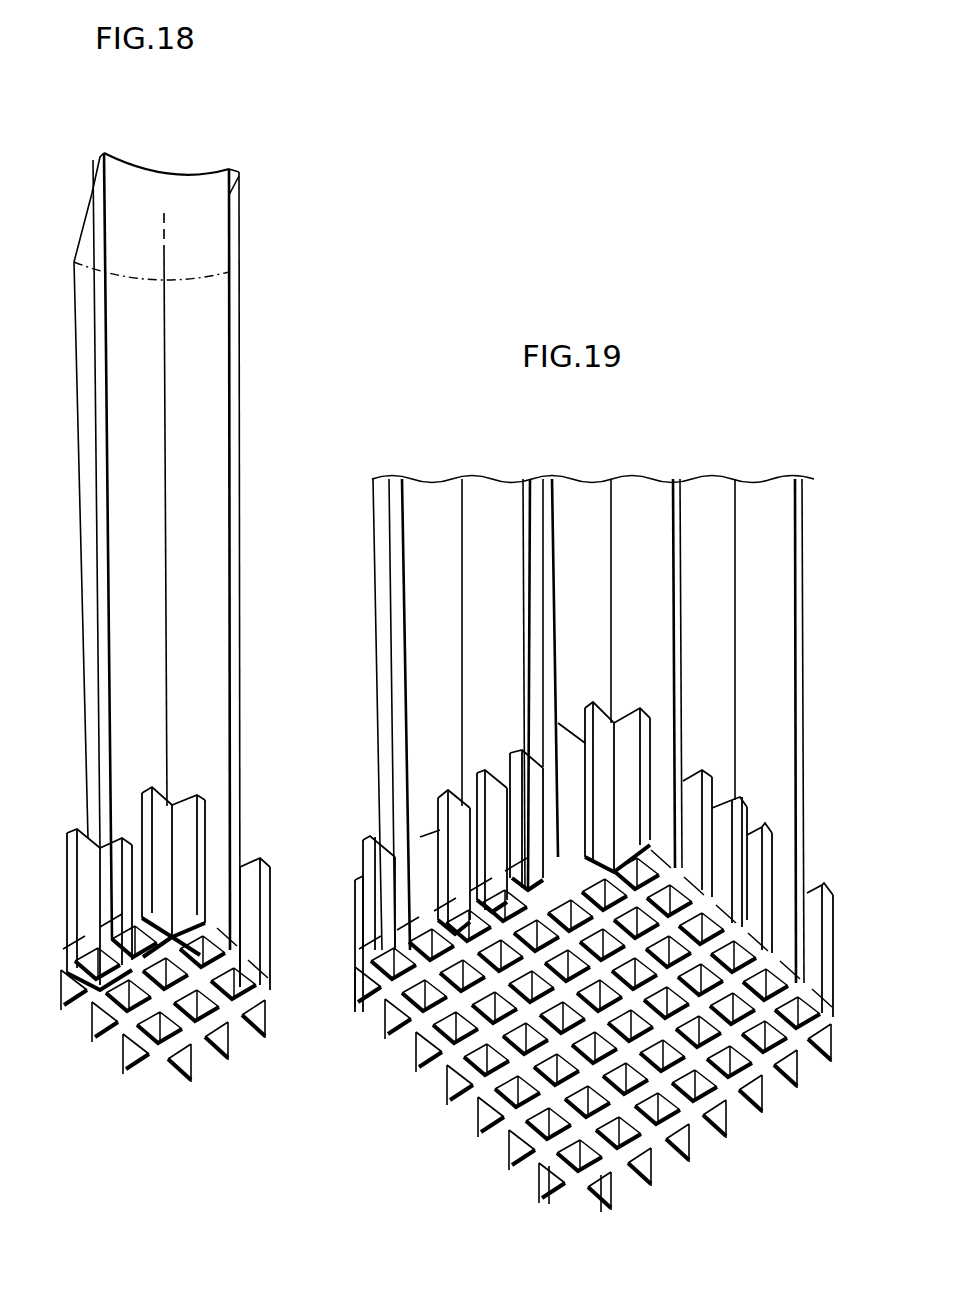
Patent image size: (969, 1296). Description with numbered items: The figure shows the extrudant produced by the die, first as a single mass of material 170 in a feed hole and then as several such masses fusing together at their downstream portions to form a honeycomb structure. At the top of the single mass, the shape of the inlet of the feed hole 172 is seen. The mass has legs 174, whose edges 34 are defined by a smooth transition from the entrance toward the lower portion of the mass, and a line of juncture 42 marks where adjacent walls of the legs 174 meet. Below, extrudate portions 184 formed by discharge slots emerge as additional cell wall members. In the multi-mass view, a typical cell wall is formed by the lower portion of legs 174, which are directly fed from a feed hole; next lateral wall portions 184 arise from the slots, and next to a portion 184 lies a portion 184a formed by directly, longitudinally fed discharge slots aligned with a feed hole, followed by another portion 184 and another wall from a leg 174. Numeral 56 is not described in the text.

In FIG. 18, the mass of material in the feed hole 170 is at (72, 185).
In FIG. 18, the shape of the inlet of the feed hole 172 is at (163, 168).
In FIG. 18, the edges of legs 34 is at (103, 352).
In FIG. 19, the edges of legs 34 is at (546, 493).
In FIG. 18, the line of juncture between adjacent walls of legs 42 is at (170, 523).
In FIG. 18, the legs 174 is at (150, 613).
In FIG. 19, the legs 174 is at (443, 578).
In FIG. 18, the extrudate portions formed by discharge slots 184 is at (162, 790).
In FIG. 19, the extrudate portions formed by discharge slots 184 is at (598, 705).
In FIG. 19, the portion of the mass in directly fed discharge slots 184a is at (465, 760).
In FIG. 18, the notched top end 56 is at (220, 786).
In FIG. 19, the notched top end 56 is at (656, 716).